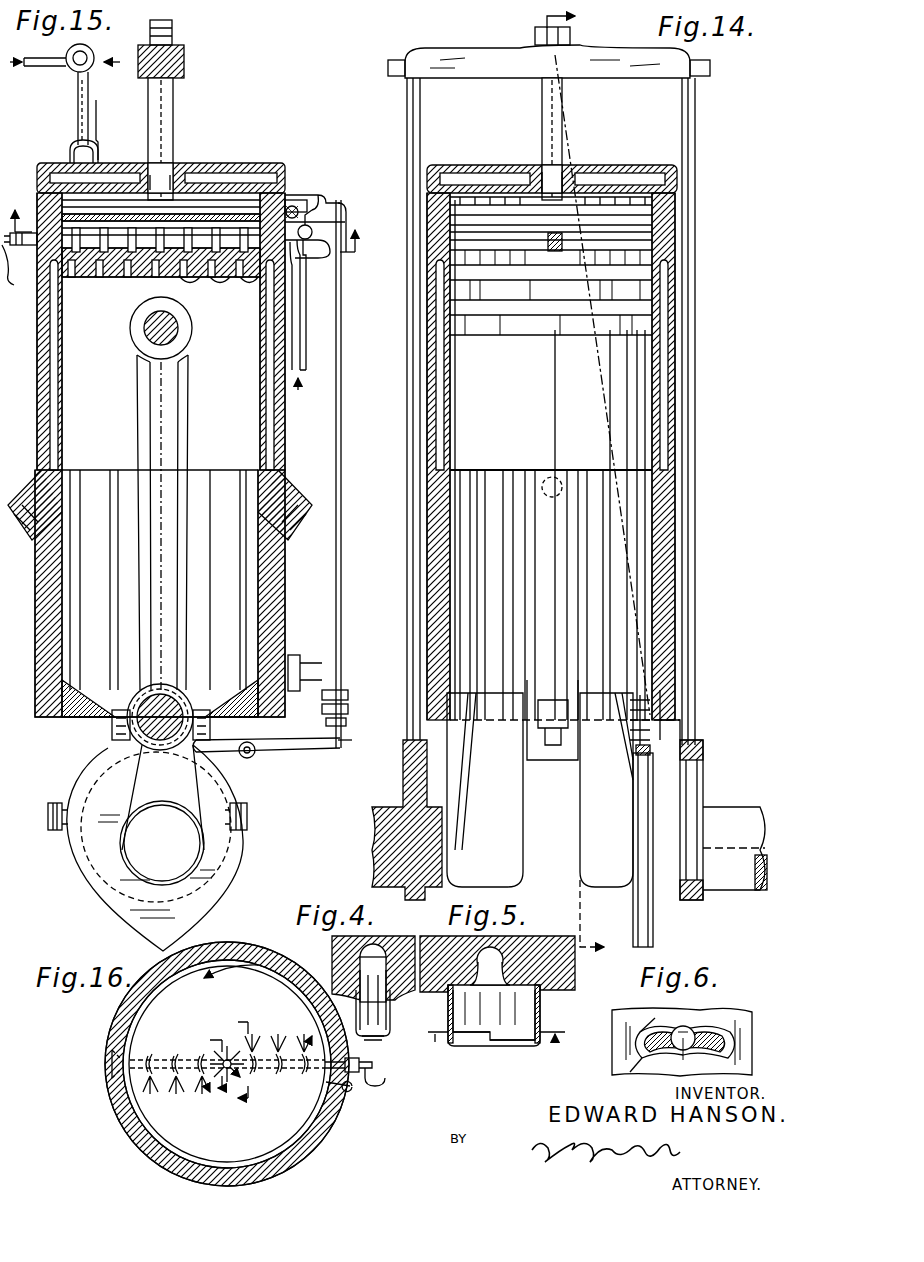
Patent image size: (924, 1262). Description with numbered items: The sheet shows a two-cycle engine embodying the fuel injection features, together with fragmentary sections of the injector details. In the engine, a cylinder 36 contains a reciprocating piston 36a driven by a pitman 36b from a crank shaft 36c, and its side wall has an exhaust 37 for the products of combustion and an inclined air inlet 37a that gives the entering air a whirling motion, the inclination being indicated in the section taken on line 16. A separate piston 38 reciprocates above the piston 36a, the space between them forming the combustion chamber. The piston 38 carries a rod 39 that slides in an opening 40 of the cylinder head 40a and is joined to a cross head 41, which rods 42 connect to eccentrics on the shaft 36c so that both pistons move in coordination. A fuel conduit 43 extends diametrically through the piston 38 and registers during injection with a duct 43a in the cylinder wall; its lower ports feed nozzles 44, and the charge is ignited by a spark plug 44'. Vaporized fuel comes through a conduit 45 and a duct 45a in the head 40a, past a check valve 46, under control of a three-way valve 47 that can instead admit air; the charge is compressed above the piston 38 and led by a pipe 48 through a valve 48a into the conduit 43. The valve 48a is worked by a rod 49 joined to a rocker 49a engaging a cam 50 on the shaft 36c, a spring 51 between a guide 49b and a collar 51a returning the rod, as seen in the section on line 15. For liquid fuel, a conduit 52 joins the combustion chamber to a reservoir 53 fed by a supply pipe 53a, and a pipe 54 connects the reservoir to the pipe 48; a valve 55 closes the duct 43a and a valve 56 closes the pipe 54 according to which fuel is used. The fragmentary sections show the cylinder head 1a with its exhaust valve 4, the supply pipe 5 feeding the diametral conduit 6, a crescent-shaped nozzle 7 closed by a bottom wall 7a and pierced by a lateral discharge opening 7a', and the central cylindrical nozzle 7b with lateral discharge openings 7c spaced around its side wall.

In FIG. 5, the cylinder head 1a is at (575, 990).
In FIG. 6, the cylinder head 1a is at (745, 1048).
In FIG. 16, the exhaust valve 4 is at (211, 1071).
In FIG. 16, the pipe 5 is at (238, 1058).
In FIG. 5, the conduit 6 is at (494, 1046).
In FIG. 5, the nozzle 7 is at (540, 1018).
In FIG. 6, the nozzle 7 is at (715, 1035).
In FIG. 5, the wall 7a is at (512, 1055).
In FIG. 6, the wall 7a is at (630, 1010).
In FIG. 5, the discharge opening 7a' is at (471, 1051).
In FIG. 6, the discharge opening 7a' is at (635, 1079).
In FIG. 4, the cylindrical nozzle 7b is at (390, 1010).
In FIG. 4, the lateral discharge openings 7c is at (386, 1038).
In FIG. 14, the section line 15- 15 is at (579, 492).
In FIG. 15, the section line 16- 16 is at (186, 217).
In FIG. 15, the cylinder 36 is at (285, 430).
In FIG. 14, the cylinder 36 is at (665, 510).
In FIG. 16, the cylinder 36 is at (292, 955).
In FIG. 15, the piston 36a is at (212, 470).
In FIG. 14, the piston 36a is at (582, 470).
In FIG. 15, the pitman 36b is at (172, 565).
In FIG. 14, the pitman 36b is at (560, 640).
In FIG. 15, the crank shaft 36c is at (125, 872).
In FIG. 14, the crank shaft 36c is at (752, 808).
In FIG. 15, the exhaust 37 is at (30, 480).
In FIG. 16, the exhaust 37 is at (110, 1062).
In FIG. 15, the air inlet 37a is at (290, 475).
In FIG. 14, the air inlet 37a is at (560, 495).
In FIG. 16, the air inlet 37a is at (345, 1057).
In FIG. 15, the separate piston 38 is at (124, 195).
In FIG. 14, the separate piston 38 is at (612, 205).
In FIG. 15, the rod 39 is at (175, 105).
In FIG. 14, the rod 39 is at (562, 112).
In FIG. 15, the opening 40 is at (175, 158).
In FIG. 14, the opening 40 is at (542, 165).
In FIG. 15, the cylinder head 40a is at (248, 166).
In FIG. 14, the cylinder head 40a is at (495, 166).
In FIG. 15, the cross head 41 is at (186, 62).
In FIG. 14, the cross head 41 is at (512, 80).
In FIG. 15, the rods 42 is at (168, 410).
In FIG. 14, the rods 42 is at (407, 367).
In FIG. 15, the fuel conduit 43 is at (120, 252).
In FIG. 16, the fuel conduit 43 is at (292, 1070).
In FIG. 15, the duct 43a is at (296, 200).
In FIG. 15, the nozzles 44 is at (161, 267).
In FIG. 14, the nozzles 44 is at (576, 243).
In FIG. 16, the nozzles 44 is at (227, 1060).
In FIG. 15, the spark plug 44' is at (19, 270).
In FIG. 15, the conduit 45 is at (77, 112).
In FIG. 15, the duct 45a is at (105, 118).
In FIG. 15, the check valve 46 is at (68, 152).
In FIG. 15, the three-way valve 47 is at (68, 72).
In FIG. 15, the pipe 48 is at (298, 206).
In FIG. 15, the valve 48a is at (312, 222).
In FIG. 15, the rod 49 is at (350, 482).
In FIG. 15, the rocker 49a is at (300, 750).
In FIG. 14, the rocker 49a is at (653, 795).
In FIG. 15, the guide 49b is at (322, 672).
In FIG. 15, the cam 50 is at (232, 858).
In FIG. 14, the cam 50 is at (633, 830).
In FIG. 15, the spring 51 is at (348, 700).
In FIG. 14, the spring 51 is at (620, 738).
In FIG. 15, the collar 51a is at (346, 728).
In FIG. 15, the conduit 52 is at (292, 270).
In FIG. 15, the reservoir 53 is at (300, 255).
In FIG. 15, the liquid fuel supply pipe 53a is at (318, 358).
In FIG. 15, the pipe 54 is at (318, 250).
In FIG. 15, the valve 55 is at (318, 195).
In FIG. 15, the valve 56 is at (346, 222).